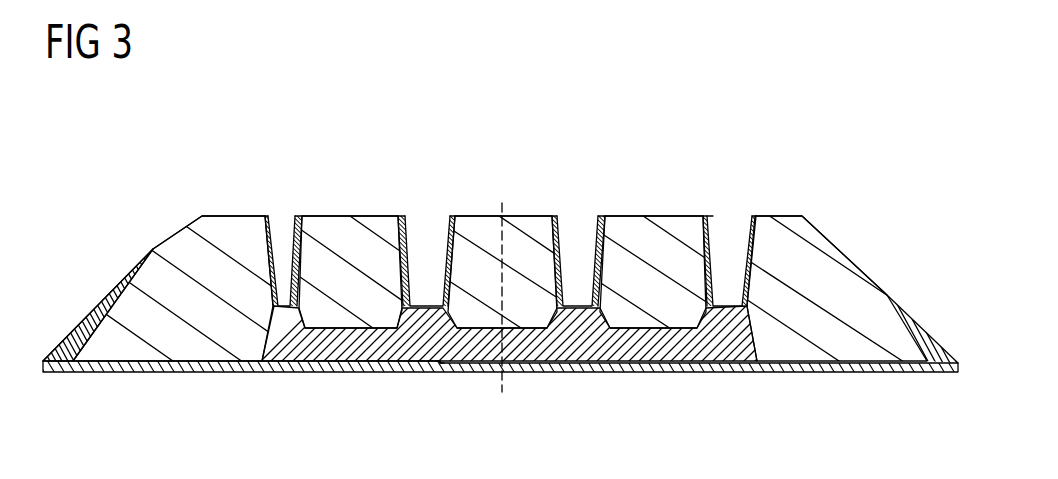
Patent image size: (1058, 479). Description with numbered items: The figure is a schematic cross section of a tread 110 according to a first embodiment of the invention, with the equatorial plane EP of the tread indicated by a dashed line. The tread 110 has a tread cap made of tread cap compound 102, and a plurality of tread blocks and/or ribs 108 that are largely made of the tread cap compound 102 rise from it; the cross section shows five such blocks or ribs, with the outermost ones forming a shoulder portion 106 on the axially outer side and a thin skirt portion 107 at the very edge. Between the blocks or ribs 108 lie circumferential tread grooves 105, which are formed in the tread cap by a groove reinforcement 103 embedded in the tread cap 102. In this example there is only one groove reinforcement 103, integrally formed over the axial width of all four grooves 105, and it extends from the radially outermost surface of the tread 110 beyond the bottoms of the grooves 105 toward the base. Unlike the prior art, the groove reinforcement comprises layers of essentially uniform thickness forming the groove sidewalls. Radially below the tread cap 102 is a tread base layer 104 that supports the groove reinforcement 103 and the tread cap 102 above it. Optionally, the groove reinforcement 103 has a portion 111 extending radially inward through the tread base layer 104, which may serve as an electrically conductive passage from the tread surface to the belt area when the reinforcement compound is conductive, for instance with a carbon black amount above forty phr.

The tread cap compound 102 is at (222, 238).
The groove reinforcement 103 is at (280, 343).
The tread base layer 104 is at (802, 373).
The circumferential tread grooves 105 is at (422, 302).
The shoulder portion 106 is at (138, 241).
The skirt portion 107 is at (68, 313).
The tread blocks and/or ribs 108 is at (339, 237).
The tread 110 is at (481, 202).
The portion of the groove reinforcement 111 is at (418, 373).
The equatorial plane EP is at (502, 316).